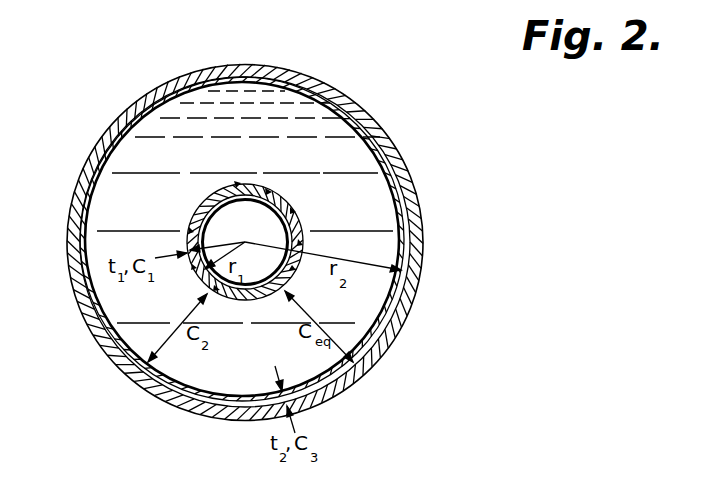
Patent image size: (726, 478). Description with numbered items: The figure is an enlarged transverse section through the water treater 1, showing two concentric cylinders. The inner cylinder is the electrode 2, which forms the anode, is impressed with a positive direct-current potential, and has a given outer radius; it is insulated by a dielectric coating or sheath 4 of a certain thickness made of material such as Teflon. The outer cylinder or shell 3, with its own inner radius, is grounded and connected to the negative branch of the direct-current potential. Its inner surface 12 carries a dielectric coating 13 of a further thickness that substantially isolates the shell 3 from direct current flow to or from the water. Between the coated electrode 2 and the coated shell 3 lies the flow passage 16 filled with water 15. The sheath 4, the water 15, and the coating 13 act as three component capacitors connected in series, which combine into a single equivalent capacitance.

The treater 1 is at (175, 72).
The electrode 2 is at (199, 208).
The outer cylinder 3 is at (409, 215).
The dielectric coating or sheath 4 is at (273, 207).
The inner surface 12 is at (370, 151).
The dielectric coating 13 is at (292, 88).
The water 15 is at (150, 138).
The flow passage 16 is at (118, 182).